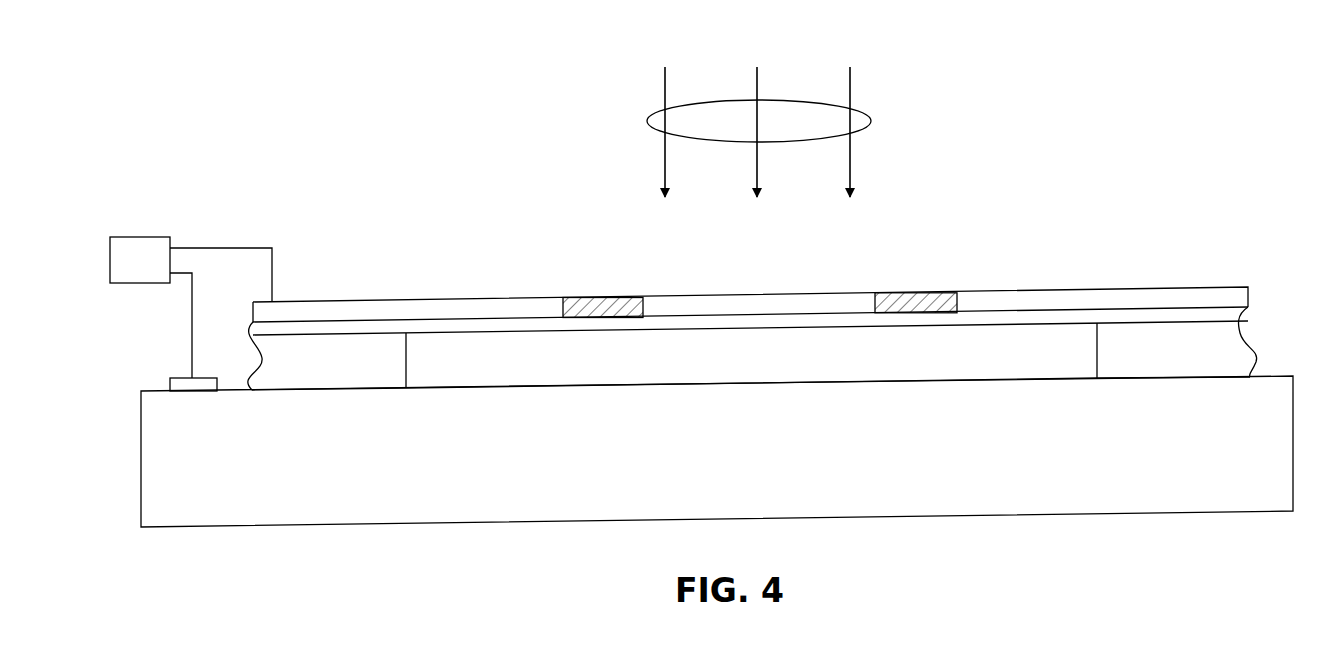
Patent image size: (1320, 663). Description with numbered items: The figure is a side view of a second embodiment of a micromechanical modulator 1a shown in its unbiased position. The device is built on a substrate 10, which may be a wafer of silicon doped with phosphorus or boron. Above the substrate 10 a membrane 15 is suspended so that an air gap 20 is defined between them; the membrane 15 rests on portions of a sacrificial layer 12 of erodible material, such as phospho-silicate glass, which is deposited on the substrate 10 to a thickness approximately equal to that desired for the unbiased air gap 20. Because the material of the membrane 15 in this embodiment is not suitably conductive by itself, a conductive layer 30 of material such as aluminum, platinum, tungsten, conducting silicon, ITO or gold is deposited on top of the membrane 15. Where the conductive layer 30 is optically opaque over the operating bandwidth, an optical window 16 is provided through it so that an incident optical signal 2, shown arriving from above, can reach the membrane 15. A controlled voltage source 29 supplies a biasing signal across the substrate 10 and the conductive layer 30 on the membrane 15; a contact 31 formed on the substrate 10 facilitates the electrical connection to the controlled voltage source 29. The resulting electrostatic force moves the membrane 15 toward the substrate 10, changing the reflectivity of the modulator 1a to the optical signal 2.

The micromechanical modulator 1a is at (456, 80).
The incident optical signal 2 is at (658, 112).
The substrate 10 is at (718, 461).
The sacrificial layer 12 is at (351, 374).
The membrane 15 is at (1244, 316).
The optical window 16 is at (754, 303).
The air gap 20 is at (770, 371).
The controlled voltage source 29 is at (138, 238).
The conductive layer 30 is at (452, 305).
The contact 31 is at (186, 386).